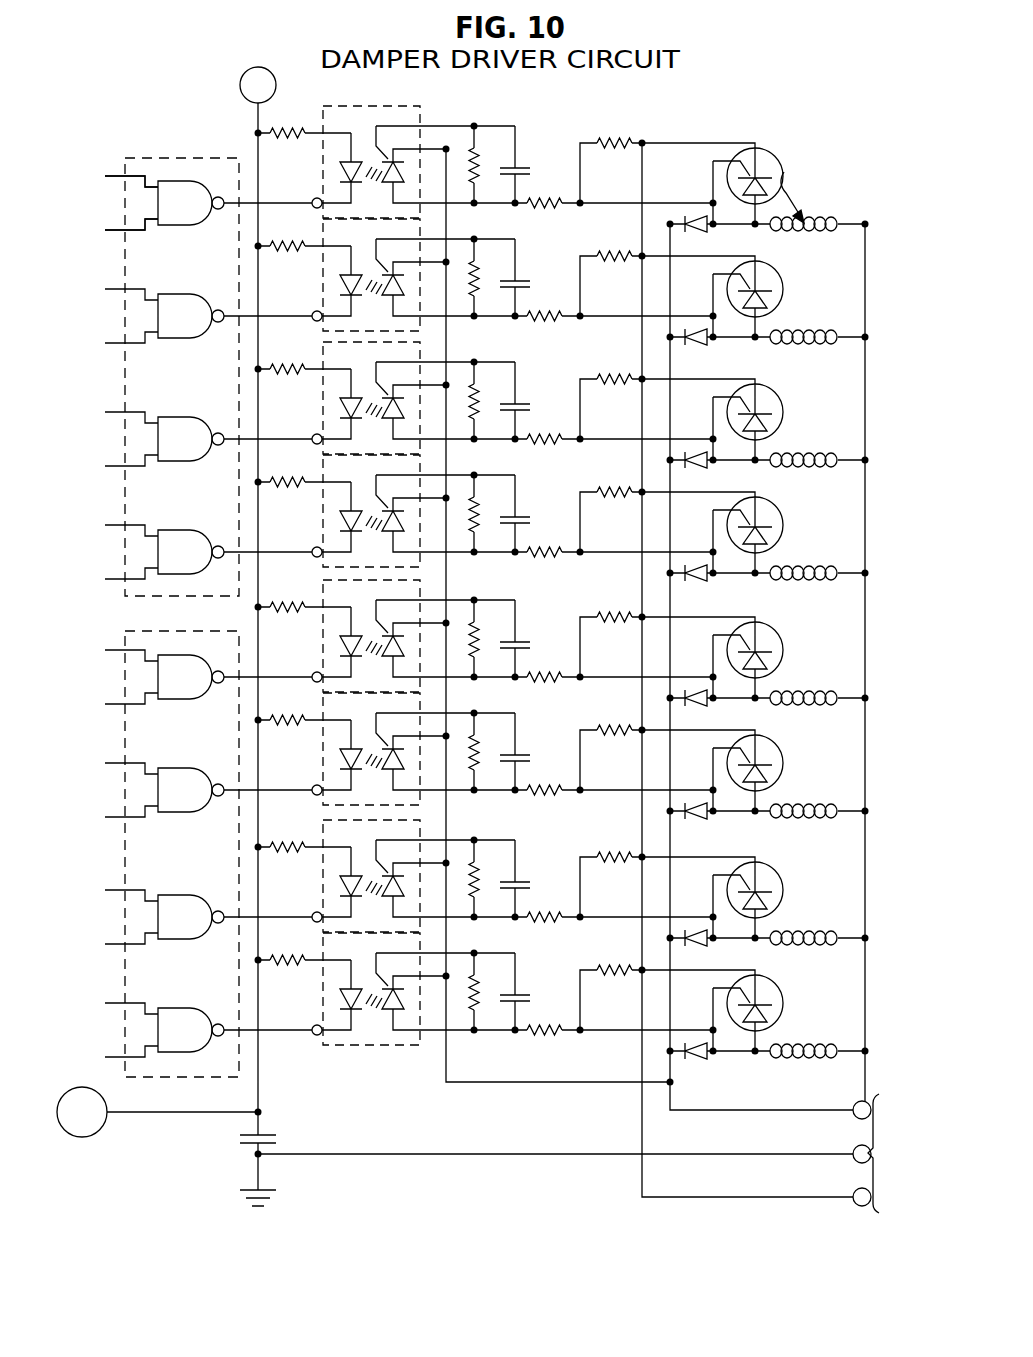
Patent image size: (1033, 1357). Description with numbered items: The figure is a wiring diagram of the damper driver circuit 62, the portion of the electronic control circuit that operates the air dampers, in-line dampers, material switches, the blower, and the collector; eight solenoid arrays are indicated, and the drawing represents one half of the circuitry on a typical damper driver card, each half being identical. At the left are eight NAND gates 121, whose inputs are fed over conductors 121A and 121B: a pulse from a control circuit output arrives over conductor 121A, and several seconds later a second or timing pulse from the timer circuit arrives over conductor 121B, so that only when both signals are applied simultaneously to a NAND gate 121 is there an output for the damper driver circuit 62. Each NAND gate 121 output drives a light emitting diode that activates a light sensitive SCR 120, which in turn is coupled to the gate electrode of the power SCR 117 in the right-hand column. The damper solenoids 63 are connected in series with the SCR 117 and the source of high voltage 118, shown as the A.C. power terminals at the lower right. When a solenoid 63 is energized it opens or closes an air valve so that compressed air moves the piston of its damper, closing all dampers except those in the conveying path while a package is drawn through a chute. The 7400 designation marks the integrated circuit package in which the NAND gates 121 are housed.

The damper driver circuit 62 is at (762, 96).
The damper solenoid 63 is at (822, 236).
The silicon controlled rectifier 117 is at (764, 160).
The source of high voltage 118 is at (854, 1104).
The light sensitive SCR 120 is at (408, 152).
The NAND gate 121 is at (192, 188).
The conductor 121A is at (114, 172).
The conductor 121B is at (114, 231).
The quad NAND gate integrated circuit 7400 is at (193, 156).